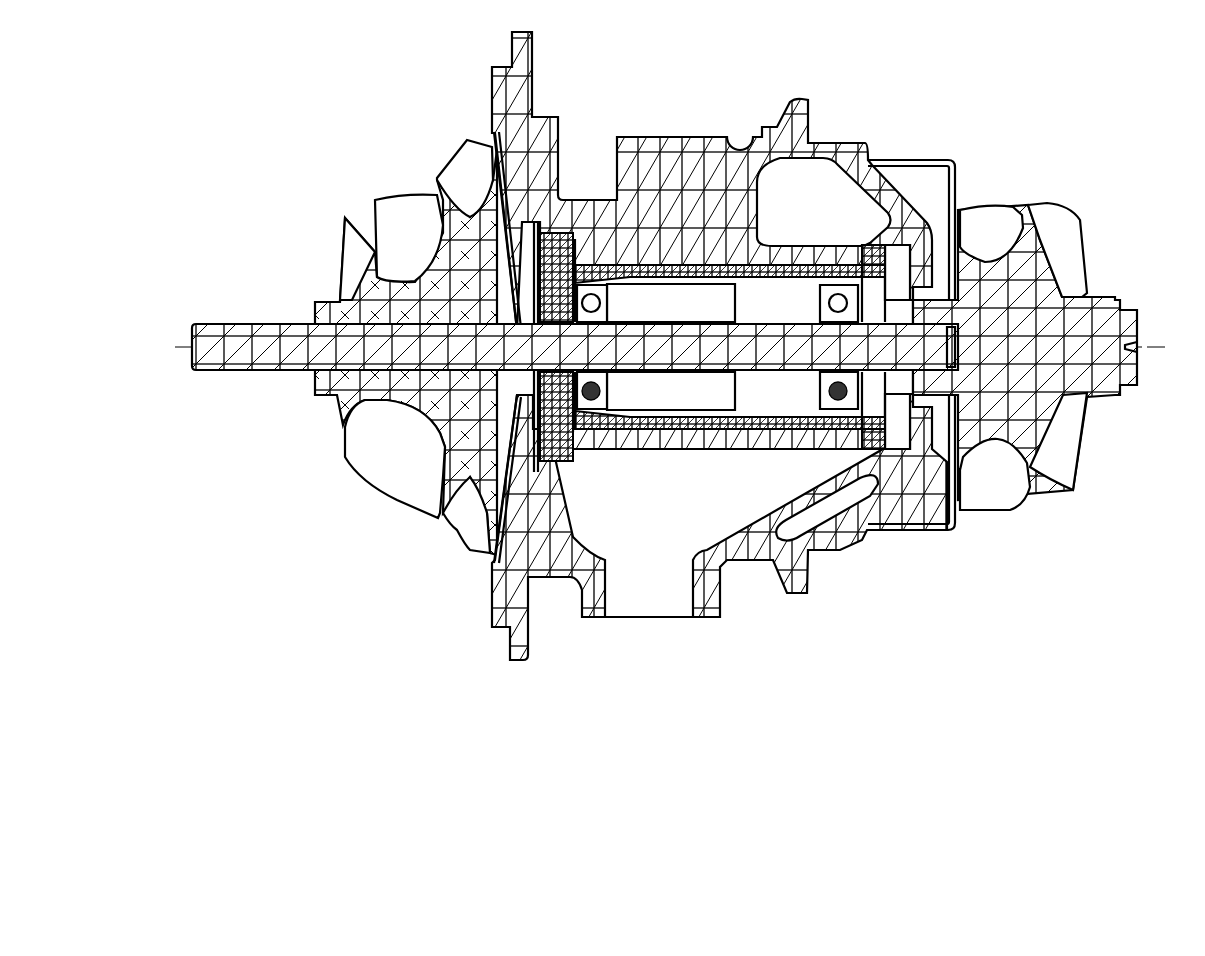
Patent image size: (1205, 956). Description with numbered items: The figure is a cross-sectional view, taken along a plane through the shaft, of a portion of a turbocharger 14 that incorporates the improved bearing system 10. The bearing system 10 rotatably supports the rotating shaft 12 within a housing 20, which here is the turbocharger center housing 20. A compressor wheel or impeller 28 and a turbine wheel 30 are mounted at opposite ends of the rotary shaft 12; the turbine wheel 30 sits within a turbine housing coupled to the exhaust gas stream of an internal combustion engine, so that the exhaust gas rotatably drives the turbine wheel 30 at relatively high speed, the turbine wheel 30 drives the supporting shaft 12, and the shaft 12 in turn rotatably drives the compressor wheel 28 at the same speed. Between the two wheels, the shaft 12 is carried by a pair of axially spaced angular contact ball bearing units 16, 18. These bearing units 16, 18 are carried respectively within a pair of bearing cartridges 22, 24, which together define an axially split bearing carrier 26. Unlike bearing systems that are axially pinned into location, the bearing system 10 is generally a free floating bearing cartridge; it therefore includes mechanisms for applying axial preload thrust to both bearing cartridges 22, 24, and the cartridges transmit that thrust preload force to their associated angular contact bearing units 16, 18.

The bearing system 10 is at (334, 149).
The shaft 12 is at (235, 385).
The turbocharger 14 is at (841, 97).
The angular contact ball bearing unit 16 is at (492, 550).
The angular contact ball bearing unit 18 is at (863, 413).
The housing 20 is at (630, 150).
The bearing cartridge 22 is at (608, 250).
The bearing cartridge 24 is at (842, 273).
The axially split bearing carrier 26 is at (698, 245).
The compressor wheel 28 is at (410, 480).
The turbine wheel 30 is at (1058, 237).